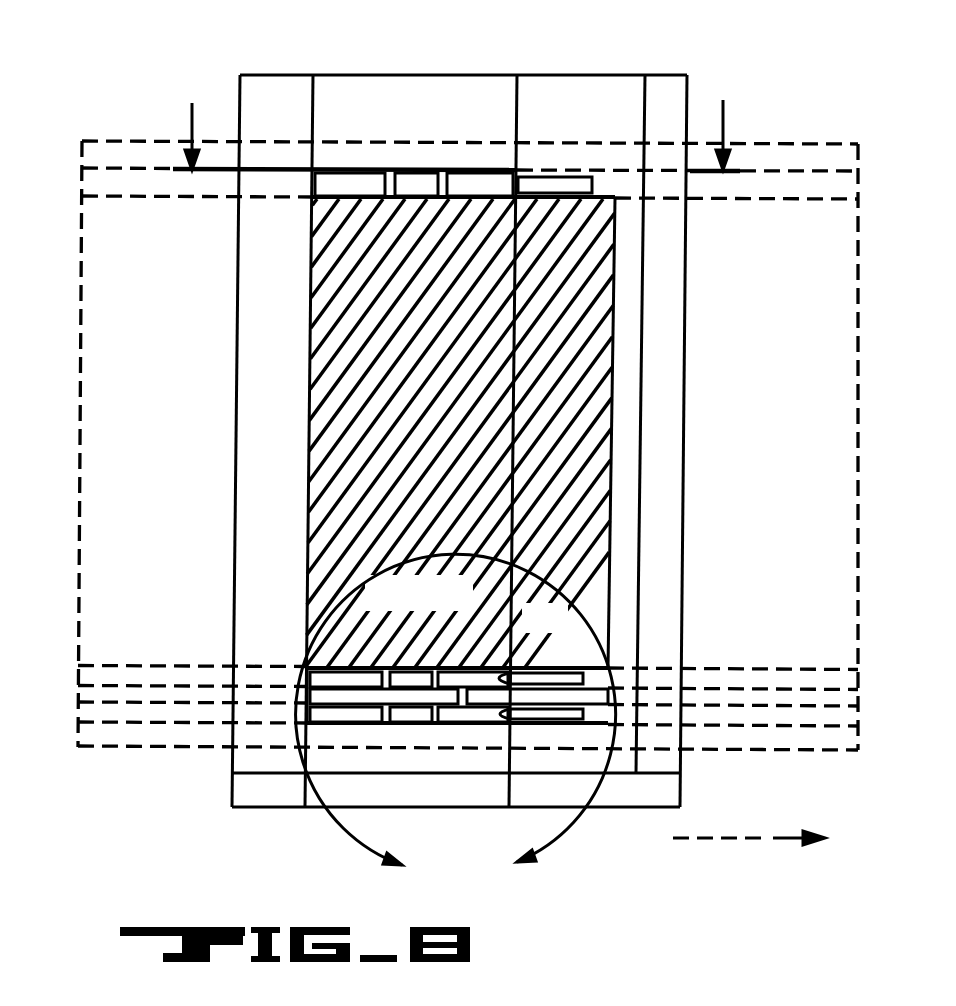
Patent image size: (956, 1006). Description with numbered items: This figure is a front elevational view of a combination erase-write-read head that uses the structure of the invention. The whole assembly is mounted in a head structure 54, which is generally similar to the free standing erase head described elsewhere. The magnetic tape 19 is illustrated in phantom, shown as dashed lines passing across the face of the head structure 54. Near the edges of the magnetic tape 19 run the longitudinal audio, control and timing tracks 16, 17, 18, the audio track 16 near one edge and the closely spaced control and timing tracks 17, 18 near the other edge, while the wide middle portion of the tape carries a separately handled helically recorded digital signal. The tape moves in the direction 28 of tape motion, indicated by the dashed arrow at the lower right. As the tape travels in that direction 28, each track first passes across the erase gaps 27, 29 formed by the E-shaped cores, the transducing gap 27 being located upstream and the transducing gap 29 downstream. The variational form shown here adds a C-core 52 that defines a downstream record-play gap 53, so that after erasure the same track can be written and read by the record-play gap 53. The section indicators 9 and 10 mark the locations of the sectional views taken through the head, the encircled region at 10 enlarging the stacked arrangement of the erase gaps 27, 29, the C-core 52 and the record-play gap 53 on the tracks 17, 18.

The head structure 54 is at (204, 76).
The audio track 16 is at (104, 177).
The magnetic tape 19 is at (84, 258).
The control track 17 is at (102, 665).
The timing track 18 is at (138, 710).
The section line 9- 9 is at (458, 135).
The upstream transducing gap 27 is at (388, 160).
The downstream transducing gap 29 is at (444, 160).
The downstream record-play gap 53 is at (517, 186).
The C-core 52 is at (556, 176).
The section line 10- 10 is at (456, 718).
The direction of tape motion 28 is at (751, 835).